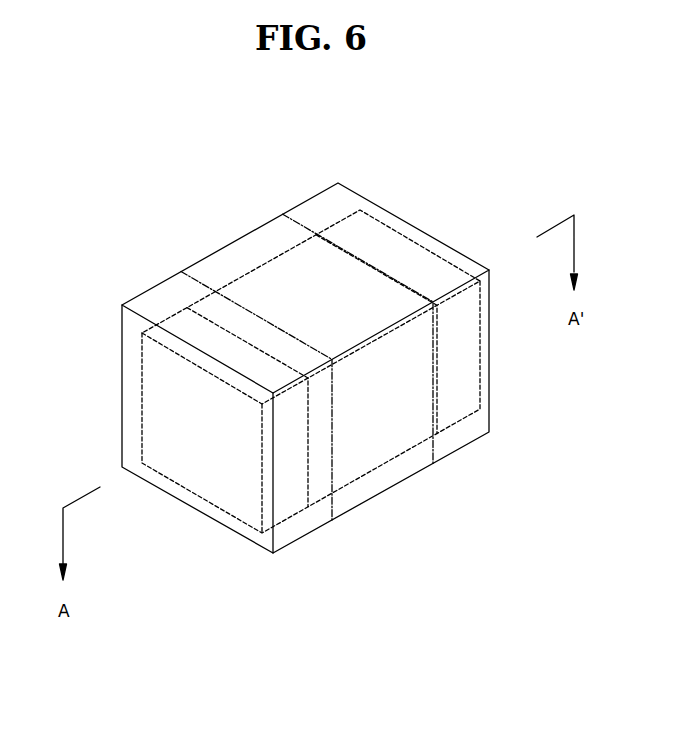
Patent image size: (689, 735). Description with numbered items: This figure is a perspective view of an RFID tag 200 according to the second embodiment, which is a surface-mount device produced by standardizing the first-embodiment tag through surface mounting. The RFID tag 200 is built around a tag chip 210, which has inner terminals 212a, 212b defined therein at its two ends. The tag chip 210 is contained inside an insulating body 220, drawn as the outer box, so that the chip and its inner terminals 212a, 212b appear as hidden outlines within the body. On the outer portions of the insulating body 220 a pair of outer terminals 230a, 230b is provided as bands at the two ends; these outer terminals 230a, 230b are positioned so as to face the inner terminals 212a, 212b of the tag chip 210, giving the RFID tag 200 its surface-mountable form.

The RFID tag 200 is at (267, 407).
The tag chip 210 is at (302, 288).
The inner terminal 212a is at (168, 416).
The inner terminal 212b is at (404, 258).
The insulating body 220 is at (372, 460).
The outer terminal 230a is at (160, 293).
The outer terminal 230b is at (320, 198).